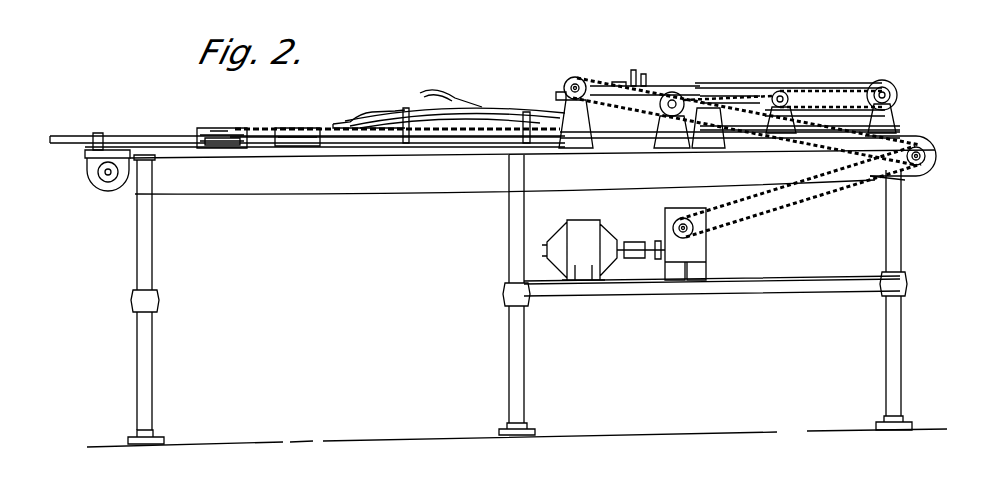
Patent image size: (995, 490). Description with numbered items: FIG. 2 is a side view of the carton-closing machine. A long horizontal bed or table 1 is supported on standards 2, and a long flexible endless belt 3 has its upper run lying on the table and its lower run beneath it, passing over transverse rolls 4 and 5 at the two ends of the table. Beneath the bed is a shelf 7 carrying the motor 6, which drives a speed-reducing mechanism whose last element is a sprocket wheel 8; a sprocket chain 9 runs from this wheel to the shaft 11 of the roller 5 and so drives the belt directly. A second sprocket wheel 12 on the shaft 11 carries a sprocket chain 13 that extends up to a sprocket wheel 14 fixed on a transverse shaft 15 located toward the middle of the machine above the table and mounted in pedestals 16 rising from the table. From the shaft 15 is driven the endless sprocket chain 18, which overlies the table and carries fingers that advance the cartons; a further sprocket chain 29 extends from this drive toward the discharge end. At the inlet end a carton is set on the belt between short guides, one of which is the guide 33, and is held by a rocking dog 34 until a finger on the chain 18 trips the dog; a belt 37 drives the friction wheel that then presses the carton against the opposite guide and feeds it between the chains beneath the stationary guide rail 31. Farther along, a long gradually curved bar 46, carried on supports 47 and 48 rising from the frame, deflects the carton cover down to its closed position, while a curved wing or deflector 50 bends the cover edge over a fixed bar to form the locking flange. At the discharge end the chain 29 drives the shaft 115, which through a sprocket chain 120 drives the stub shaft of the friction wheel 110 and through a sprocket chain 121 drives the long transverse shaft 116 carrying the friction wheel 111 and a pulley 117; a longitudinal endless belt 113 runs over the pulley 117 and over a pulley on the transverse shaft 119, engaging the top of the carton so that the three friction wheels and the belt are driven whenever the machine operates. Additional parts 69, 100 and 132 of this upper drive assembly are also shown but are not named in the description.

The bed or table 1 is at (365, 147).
The standards 2 is at (150, 369).
The endless belt 3 is at (287, 197).
The transverse roll 4 is at (103, 183).
The transverse roll 5 is at (927, 172).
The motor 6 is at (605, 236).
The shelf 7 is at (730, 288).
The sprocket wheel 8 is at (714, 236).
The sprocket chain 9 is at (770, 212).
The shaft 11 is at (937, 141).
The second sprocket wheel 12 is at (920, 134).
The sprocket chain 13 is at (763, 140).
The sprocket wheel 14 is at (580, 82).
The transverse shaft 15 is at (567, 84).
The pedestals 16 is at (558, 101).
The endless sprocket chain 18 is at (463, 133).
The sprocket chain 29 is at (341, 120).
The guide rail 31 is at (302, 128).
The short guide 33 is at (128, 135).
The rocking dog 34 is at (224, 140).
The belt 37 is at (243, 128).
The long bar 46 is at (482, 108).
The support 47 is at (407, 145).
The support 48 is at (531, 143).
The curved wing or deflector 50 is at (433, 95).
The posts 69 is at (637, 72).
The bar 100 is at (620, 84).
The friction wheel 110 is at (706, 92).
The friction wheel 111 is at (806, 84).
The longitudinal endless belt 113 is at (836, 80).
The shaft 115 is at (777, 92).
The long transverse shaft 116 is at (900, 86).
The pulley 117 is at (898, 88).
The long transverse shaft 119 is at (673, 94).
The sprocket chain 120 is at (714, 88).
The sprocket chain 121 is at (850, 84).
The bar 132 is at (852, 112).